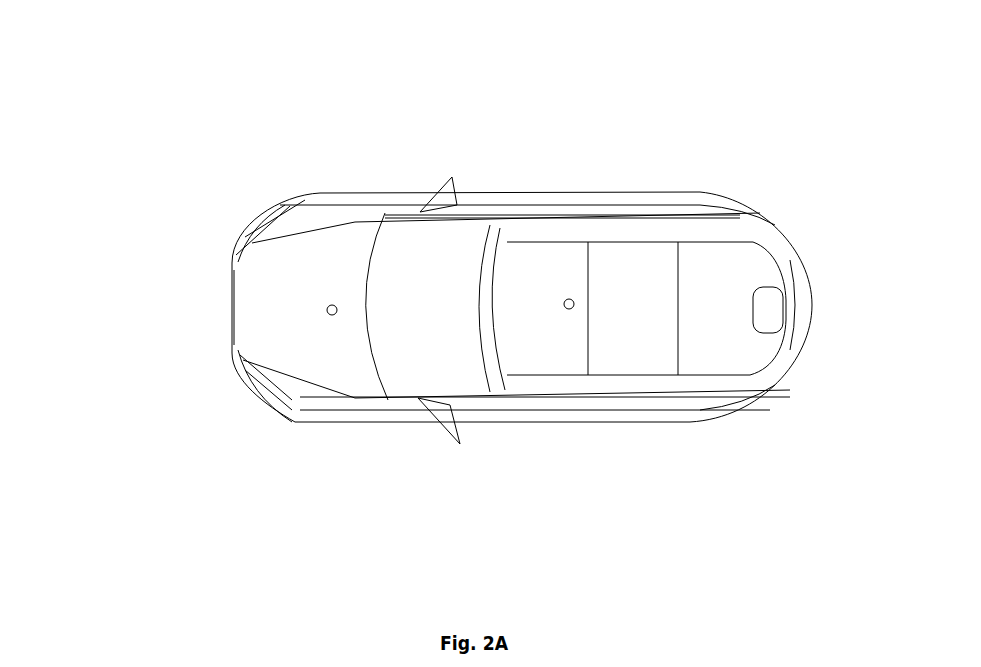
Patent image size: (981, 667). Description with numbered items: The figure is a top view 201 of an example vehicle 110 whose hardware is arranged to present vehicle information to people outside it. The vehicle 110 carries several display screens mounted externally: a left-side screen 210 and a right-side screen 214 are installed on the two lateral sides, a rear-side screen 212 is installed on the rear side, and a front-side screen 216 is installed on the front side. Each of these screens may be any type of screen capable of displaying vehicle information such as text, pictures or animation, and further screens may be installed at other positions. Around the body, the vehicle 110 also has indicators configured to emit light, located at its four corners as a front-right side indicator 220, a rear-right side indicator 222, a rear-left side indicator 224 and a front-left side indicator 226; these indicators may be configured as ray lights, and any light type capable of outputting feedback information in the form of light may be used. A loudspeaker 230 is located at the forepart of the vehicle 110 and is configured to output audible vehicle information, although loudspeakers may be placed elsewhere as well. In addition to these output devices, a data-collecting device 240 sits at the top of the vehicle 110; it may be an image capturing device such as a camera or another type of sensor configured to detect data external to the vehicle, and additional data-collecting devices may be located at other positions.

The top view 201 is at (196, 58).
The vehicle 110 is at (800, 256).
The left-side screen 210 is at (473, 212).
The rear-side screen 212 is at (792, 303).
The right-side screen 214 is at (505, 397).
The front-side screen 216 is at (258, 303).
The front-right side indicator 220 is at (282, 206).
The rear-right side indicator 222 is at (760, 215).
The rear-left side indicator 224 is at (760, 397).
The front-left side indicator 226 is at (292, 400).
The loudspeaker 230 is at (331, 301).
The data-collecting device 240 is at (545, 300).